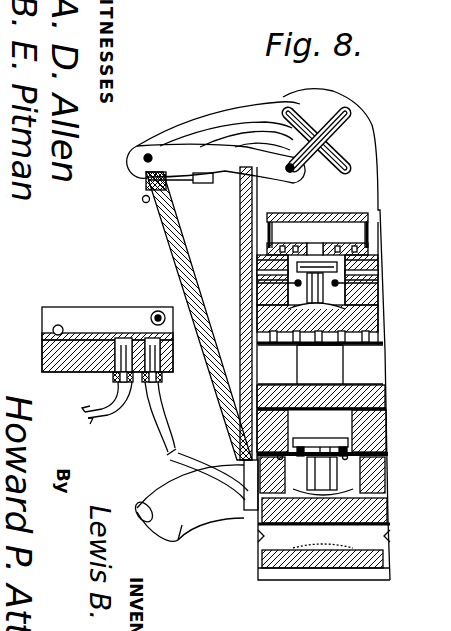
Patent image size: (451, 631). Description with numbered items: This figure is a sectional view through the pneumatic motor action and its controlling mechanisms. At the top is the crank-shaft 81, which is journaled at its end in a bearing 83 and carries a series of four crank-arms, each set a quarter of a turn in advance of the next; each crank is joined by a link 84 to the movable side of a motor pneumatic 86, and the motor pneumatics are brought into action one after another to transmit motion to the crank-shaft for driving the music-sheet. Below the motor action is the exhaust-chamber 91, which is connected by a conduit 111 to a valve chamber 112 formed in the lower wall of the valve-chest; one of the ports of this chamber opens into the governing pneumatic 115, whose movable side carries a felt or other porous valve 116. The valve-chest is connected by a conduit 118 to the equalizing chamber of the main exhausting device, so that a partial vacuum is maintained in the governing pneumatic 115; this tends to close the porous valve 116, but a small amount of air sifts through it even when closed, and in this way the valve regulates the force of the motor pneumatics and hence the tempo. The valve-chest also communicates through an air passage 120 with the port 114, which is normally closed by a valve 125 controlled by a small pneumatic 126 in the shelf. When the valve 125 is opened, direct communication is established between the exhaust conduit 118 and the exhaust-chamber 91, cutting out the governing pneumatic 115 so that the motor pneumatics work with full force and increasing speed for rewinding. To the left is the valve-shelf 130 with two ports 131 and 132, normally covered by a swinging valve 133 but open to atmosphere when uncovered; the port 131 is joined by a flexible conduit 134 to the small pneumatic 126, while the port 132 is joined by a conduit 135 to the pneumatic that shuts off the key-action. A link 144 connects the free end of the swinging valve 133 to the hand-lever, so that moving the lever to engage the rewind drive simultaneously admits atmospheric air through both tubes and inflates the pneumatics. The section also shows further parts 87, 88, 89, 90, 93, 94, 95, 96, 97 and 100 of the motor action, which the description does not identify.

The crank-shaft 81 is at (334, 158).
The bearing 83 is at (368, 172).
The link 84 is at (270, 140).
The motor pneumatic 86 is at (177, 243).
The valve disc 87 is at (300, 269).
The valve chamber 88 is at (380, 270).
The valve stem 89 is at (338, 297).
The valve stem block 90 is at (317, 240).
The exhaust-chamber 91 is at (330, 315).
The wall 93 is at (300, 228).
The cap plate 94 is at (268, 218).
The wall 95 is at (340, 234).
The perforated plate 96 is at (366, 332).
The chamber 97 is at (364, 346).
The central chamber 100 is at (320, 356).
The conduit 111 is at (330, 378).
The valve chamber 112 is at (330, 423).
The port 114 is at (354, 445).
The governing pneumatic 115 is at (383, 555).
The porous valve 116 is at (322, 562).
The conduit 118 is at (178, 524).
The air passage 120 is at (348, 472).
The valve 125 is at (313, 441).
The small pneumatic 126 is at (350, 500).
The valve-shelf 130 is at (78, 365).
The port 131 is at (162, 348).
The port 132 is at (123, 347).
The valve 133 is at (105, 333).
The flexible conduit 134 is at (172, 457).
The conduit 135 is at (108, 412).
The link 144 is at (167, 325).